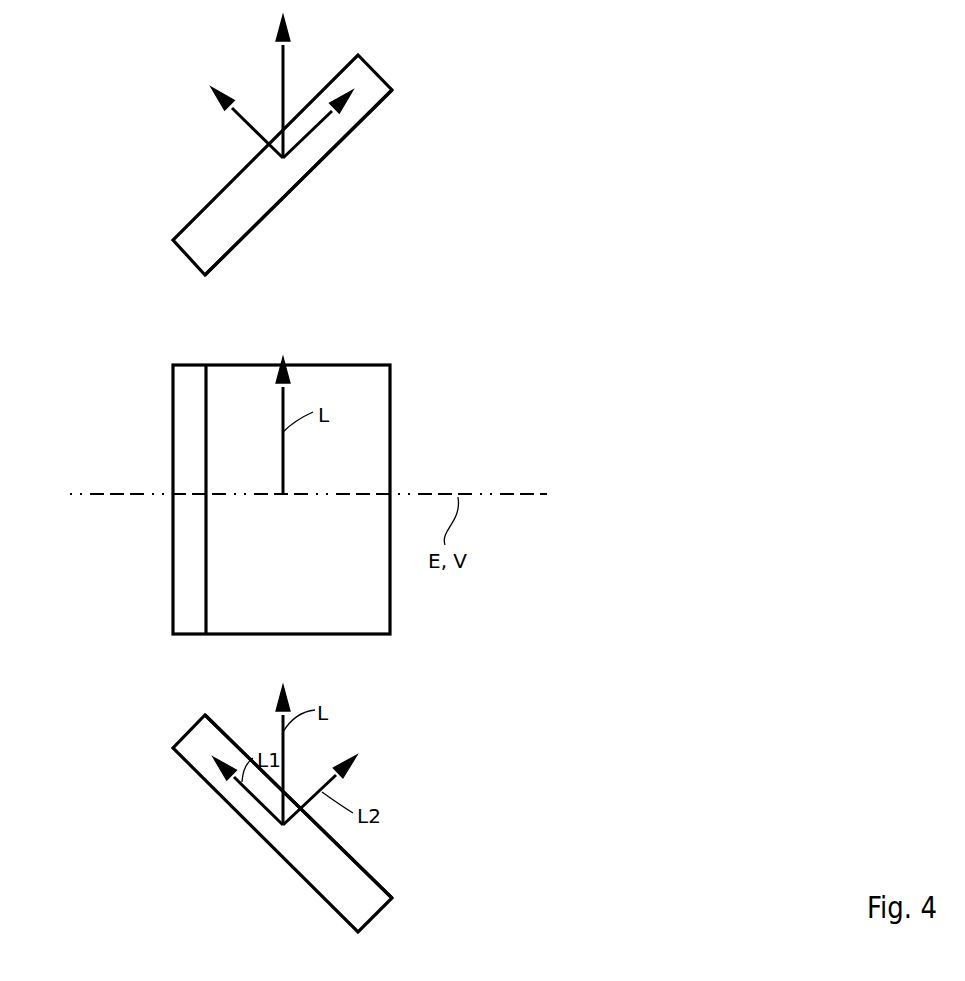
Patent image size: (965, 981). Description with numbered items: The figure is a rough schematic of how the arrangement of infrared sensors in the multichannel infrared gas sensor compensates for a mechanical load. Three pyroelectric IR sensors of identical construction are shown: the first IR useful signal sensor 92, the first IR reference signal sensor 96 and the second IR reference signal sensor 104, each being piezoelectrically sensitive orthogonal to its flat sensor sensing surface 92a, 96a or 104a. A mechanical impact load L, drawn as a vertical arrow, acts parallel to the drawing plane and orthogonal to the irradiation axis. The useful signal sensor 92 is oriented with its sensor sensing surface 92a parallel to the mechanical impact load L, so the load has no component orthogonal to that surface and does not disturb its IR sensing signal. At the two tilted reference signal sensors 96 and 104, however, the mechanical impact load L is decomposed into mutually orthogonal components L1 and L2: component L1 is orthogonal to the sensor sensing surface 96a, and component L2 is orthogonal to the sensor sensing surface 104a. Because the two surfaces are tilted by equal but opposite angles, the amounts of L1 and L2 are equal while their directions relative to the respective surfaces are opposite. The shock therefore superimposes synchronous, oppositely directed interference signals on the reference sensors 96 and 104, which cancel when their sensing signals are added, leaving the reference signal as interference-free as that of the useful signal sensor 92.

The first infrared useful signal sensor 92 is at (182, 372).
The sensor sensing surface 92a is at (249, 388).
The first IR reference signal sensor 96 is at (197, 224).
The sensor sensing surface 96a is at (257, 230).
The second IR reference signal sensor 104 is at (313, 868).
The sensor sensing surface 104a is at (232, 738).
The mechanical impact load L is at (283, 60).
The component of the mechanical impact load L1 is at (241, 116).
The component of the mechanical impact load L2 is at (323, 123).